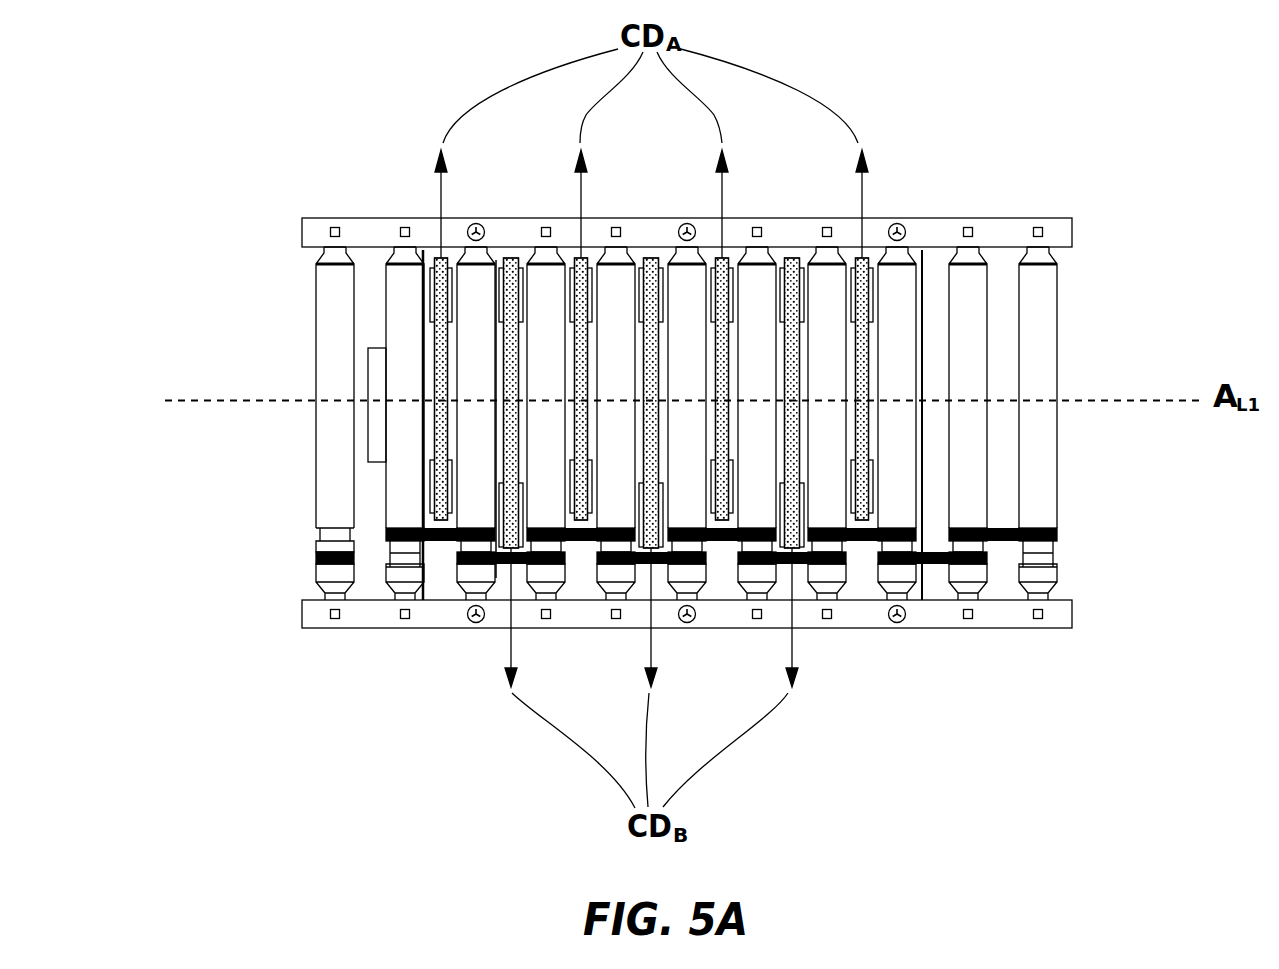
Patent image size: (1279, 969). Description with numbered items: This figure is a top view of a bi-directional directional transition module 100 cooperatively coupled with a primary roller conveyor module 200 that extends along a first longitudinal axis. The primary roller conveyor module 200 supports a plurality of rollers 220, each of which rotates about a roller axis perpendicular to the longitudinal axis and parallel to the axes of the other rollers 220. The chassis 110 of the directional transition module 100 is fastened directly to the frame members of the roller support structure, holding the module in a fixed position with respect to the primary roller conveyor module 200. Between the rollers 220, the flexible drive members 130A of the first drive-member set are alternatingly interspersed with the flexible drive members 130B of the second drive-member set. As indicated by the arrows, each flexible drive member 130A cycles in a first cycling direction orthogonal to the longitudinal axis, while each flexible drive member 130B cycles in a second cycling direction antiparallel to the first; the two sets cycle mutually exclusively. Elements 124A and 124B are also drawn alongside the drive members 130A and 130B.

The directional transition module 100 is at (636, 449).
The chassis 110 is at (915, 598).
The primary roller conveyor module 200 is at (943, 235).
The roller 220 is at (402, 440).
The flexible drive member 130A is at (435, 340).
The flexible drive member 130B is at (502, 483).
The first plate 124A is at (427, 492).
The second plate 124B is at (494, 578).